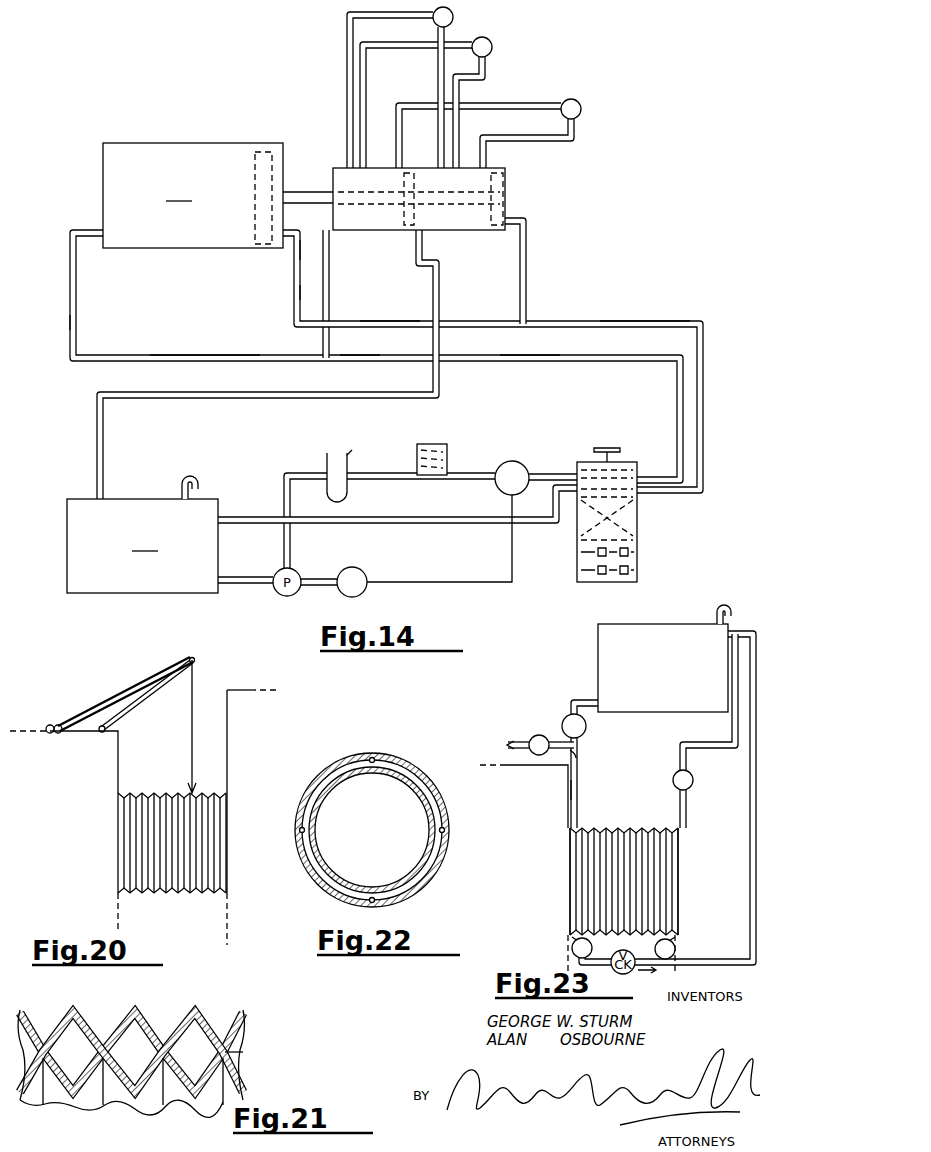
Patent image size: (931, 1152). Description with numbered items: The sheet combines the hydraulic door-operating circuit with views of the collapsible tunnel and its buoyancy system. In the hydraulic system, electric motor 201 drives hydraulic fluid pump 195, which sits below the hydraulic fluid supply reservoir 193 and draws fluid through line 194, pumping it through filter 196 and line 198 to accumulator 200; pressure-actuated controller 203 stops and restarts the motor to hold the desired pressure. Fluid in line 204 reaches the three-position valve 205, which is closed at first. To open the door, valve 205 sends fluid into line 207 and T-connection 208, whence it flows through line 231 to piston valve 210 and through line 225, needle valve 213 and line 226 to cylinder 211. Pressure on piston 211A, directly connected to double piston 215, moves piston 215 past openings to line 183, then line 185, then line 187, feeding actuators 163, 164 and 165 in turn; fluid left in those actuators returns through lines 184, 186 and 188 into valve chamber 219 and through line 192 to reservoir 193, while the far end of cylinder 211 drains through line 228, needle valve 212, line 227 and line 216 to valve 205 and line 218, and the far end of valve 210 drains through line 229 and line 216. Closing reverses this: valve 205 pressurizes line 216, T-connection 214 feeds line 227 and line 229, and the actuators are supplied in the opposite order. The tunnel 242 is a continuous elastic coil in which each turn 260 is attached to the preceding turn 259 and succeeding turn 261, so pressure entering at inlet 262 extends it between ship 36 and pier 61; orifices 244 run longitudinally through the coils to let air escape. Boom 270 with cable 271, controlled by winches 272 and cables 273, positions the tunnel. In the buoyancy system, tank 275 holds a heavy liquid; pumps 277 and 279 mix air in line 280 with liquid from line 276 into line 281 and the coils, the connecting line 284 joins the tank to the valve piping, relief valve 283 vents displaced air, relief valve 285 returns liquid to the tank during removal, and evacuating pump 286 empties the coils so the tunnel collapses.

In FIG. 14, the actuator 163 is at (449, 14).
In FIG. 14, the actuator 164 is at (488, 40).
In FIG. 14, the actuator 165 is at (577, 104).
In FIG. 14, the line 183 is at (348, 40).
In FIG. 14, the line 184 is at (447, 30).
In FIG. 14, the line 185 is at (365, 70).
In FIG. 14, the line 186 is at (486, 72).
In FIG. 14, the line 187 is at (399, 140).
In FIG. 14, the line 188 is at (572, 143).
In FIG. 14, the piston valve 210 is at (513, 170).
In FIG. 14, the cylinder 211 is at (218, 195).
In FIG. 14, the piston 211A is at (268, 150).
In FIG. 14, the double piston 215 is at (505, 198).
In FIG. 14, the valve chamber 219 is at (455, 215).
In FIG. 14, the line 226 is at (73, 270).
In FIG. 14, the needle valve 213 is at (73, 315).
In FIG. 14, the line 228 is at (298, 274).
In FIG. 14, the needle valve 212 is at (298, 298).
In FIG. 14, the line 231 is at (327, 265).
In FIG. 14, the line 192 is at (440, 273).
In FIG. 14, the line 229 is at (528, 260).
In FIG. 14, the line 227 is at (420, 314).
In FIG. 14, the T-connection 214 is at (528, 320).
In FIG. 14, the line 216 is at (662, 320).
In FIG. 14, the line 225 is at (210, 354).
In FIG. 14, the T-connection 208 is at (329, 356).
In FIG. 14, the line 207 is at (490, 356).
In FIG. 14, the hydraulic fluid supply reservoir 193 is at (142, 536).
In FIG. 14, the line 194 is at (236, 578).
In FIG. 14, the hydraulic fluid pump 195 is at (300, 575).
In FIG. 14, the electric motor 201 is at (367, 575).
In FIG. 14, the filter 196 is at (326, 455).
In FIG. 14, the line 198 is at (400, 482).
In FIG. 14, the accumulator 200 is at (448, 446).
In FIG. 14, the pressure-actuated controller 203 is at (512, 461).
In FIG. 14, the line 204 is at (531, 476).
In FIG. 14, the 3-position valve 205 is at (637, 464).
In FIG. 14, the line 218 is at (397, 523).
In FIG. 20, the winch 272 is at (52, 724).
In FIG. 20, the cable 273 is at (112, 698).
In FIG. 20, the boom 270 is at (140, 697).
In FIG. 20, the cable 271 is at (190, 742).
In FIG. 20, the tunnel 242 is at (178, 792).
In FIG. 22, the tunnel 242 is at (420, 811).
In FIG. 23, the tunnel 242 is at (612, 828).
In FIG. 21, the tunnel 242 is at (213, 1024).
In FIG. 22, the orifices 244 is at (305, 830).
In FIG. 21, the orifices 244 is at (243, 1052).
In FIG. 23, the line 276 is at (572, 706).
In FIG. 23, the pump 277 is at (586, 726).
In FIG. 23, the pump 279 is at (536, 735).
In FIG. 23, the line 280 is at (579, 752).
In FIG. 23, the line 281 is at (578, 788).
In FIG. 23, the pier 61 is at (557, 800).
In FIG. 23, the tank 275 is at (690, 704).
In FIG. 23, the line 284 is at (704, 750).
In FIG. 23, the relief valve 283 is at (693, 782).
In FIG. 23, the inlet 262 is at (569, 833).
In FIG. 23, the ship 36 is at (707, 858).
In FIG. 23, the evacuating pump 286 is at (592, 945).
In FIG. 23, the relief valve 285 is at (673, 945).
In FIG. 21, the turn 259 is at (70, 1013).
In FIG. 21, the turn 260 is at (128, 1012).
In FIG. 21, the turn 261 is at (188, 1016).